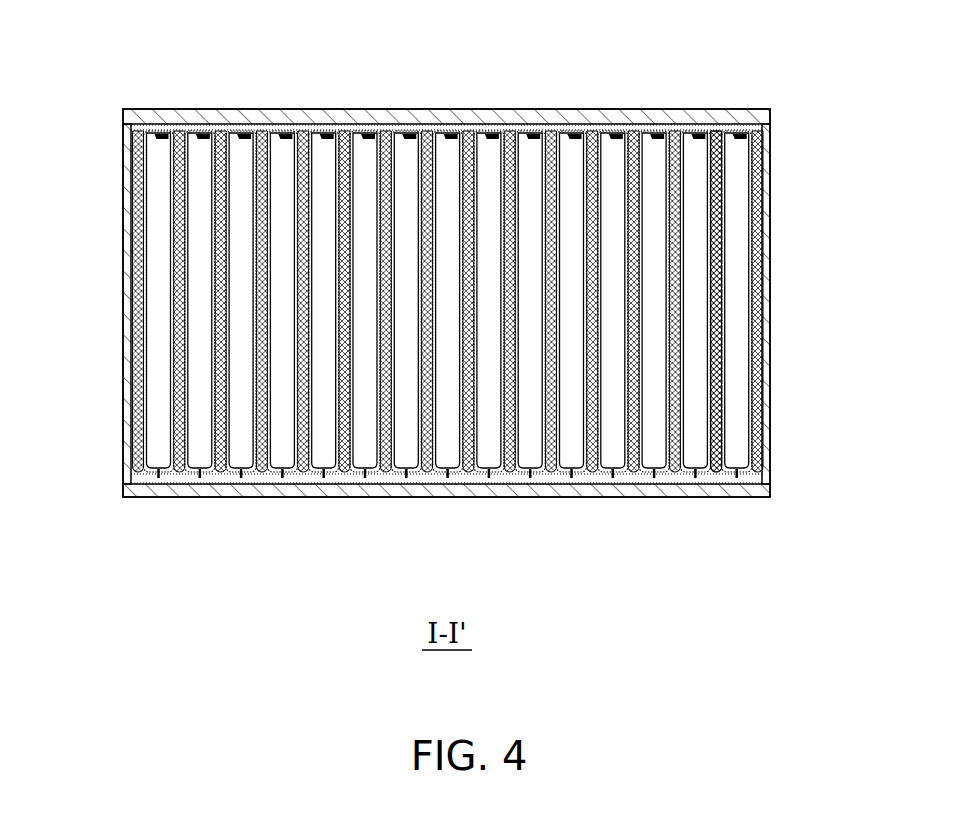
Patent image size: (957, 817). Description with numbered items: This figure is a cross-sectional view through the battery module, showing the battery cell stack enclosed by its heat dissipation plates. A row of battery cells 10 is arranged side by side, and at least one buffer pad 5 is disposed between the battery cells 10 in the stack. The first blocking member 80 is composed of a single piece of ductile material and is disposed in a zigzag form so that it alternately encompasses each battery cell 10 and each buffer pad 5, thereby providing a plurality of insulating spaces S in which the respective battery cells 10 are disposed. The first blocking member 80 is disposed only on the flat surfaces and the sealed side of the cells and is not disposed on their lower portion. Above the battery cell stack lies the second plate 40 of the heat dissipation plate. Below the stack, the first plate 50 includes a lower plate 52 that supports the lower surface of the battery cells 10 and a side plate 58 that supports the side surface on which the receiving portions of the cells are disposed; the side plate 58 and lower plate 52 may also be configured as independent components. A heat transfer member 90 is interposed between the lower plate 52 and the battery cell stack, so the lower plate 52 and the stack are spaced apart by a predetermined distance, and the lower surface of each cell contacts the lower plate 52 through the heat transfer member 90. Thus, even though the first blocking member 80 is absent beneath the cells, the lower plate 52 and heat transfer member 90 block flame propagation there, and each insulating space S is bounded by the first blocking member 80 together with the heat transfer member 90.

The buffer pad 5 is at (673, 372).
The battery cell 10 is at (697, 238).
The second plate 40 is at (648, 117).
The first plate 50 is at (473, 332).
The lower plate 52 is at (710, 492).
The side plate 58 is at (767, 424).
The first blocking member 80 is at (723, 173).
The heat transfer member 90 is at (470, 128).
The insulating space S is at (150, 238).